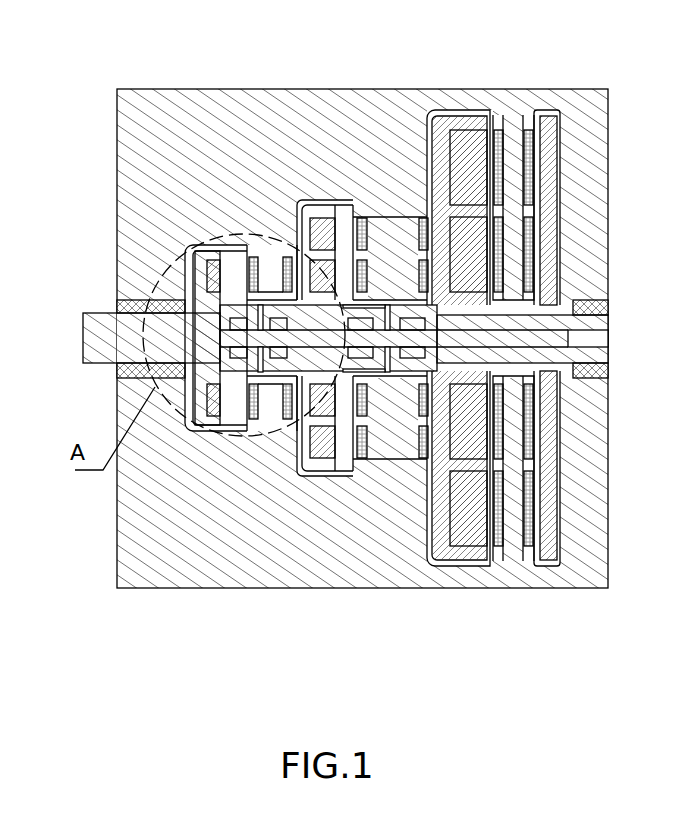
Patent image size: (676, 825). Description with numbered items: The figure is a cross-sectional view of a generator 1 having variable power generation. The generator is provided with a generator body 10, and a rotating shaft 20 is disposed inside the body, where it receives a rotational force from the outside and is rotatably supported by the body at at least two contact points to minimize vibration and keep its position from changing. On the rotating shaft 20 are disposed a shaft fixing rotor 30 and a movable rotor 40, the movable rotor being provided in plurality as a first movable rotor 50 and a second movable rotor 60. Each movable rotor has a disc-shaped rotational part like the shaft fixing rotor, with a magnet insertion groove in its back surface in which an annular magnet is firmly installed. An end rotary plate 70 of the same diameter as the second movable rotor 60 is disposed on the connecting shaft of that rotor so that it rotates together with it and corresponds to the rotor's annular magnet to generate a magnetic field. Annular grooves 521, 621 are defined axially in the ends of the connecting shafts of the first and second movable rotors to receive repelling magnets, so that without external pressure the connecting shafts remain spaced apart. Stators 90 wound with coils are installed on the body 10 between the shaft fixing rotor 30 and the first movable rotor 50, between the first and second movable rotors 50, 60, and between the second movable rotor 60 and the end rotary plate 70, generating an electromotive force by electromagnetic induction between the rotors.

The generator 1 is at (120, 62).
The generator body 10 is at (243, 89).
The rotating shaft 20 is at (103, 323).
The shaft fixing rotor 30 is at (200, 273).
The movable rotor 40 is at (370, 38).
The first movable rotor 50 is at (323, 212).
The second movable rotor 60 is at (397, 237).
The end rotary plate 70 is at (550, 157).
The stator 90 is at (270, 270).
The annular groove 521 is at (380, 352).
The annular groove 621 is at (390, 323).